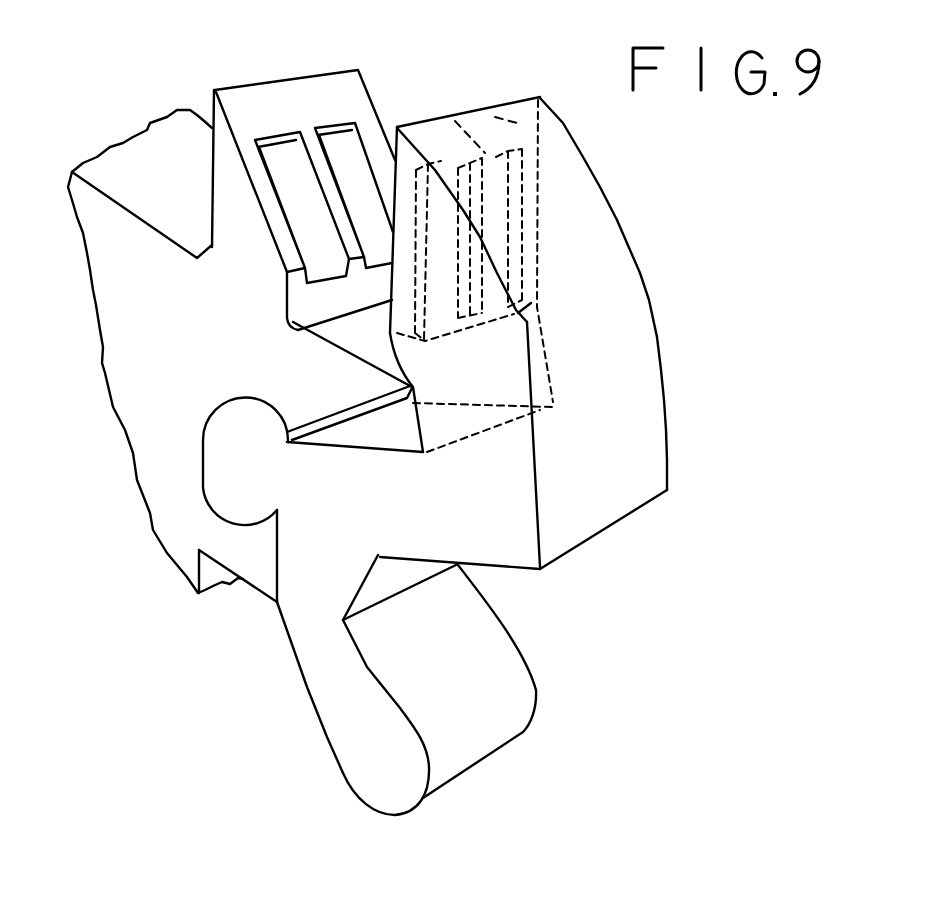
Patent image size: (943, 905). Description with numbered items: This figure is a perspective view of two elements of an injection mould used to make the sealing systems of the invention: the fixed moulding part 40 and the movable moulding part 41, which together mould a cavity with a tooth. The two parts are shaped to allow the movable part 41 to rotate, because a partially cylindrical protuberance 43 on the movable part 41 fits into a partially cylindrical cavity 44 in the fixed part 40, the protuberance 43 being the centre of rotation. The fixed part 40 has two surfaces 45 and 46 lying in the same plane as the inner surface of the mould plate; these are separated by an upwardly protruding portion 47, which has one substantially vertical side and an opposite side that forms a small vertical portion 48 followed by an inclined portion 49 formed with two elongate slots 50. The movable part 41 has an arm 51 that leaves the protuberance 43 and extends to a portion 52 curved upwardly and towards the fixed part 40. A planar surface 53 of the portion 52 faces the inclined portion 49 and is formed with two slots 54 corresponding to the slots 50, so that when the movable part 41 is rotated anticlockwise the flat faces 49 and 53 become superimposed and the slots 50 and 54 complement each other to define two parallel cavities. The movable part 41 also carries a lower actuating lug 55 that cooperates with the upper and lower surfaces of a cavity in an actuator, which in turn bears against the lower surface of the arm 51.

The fixed moulding part 40 is at (92, 372).
The movable moulding part 41 is at (702, 431).
The partially cylindrical protuberance 43 is at (240, 457).
The partially cylindrical cavity 44 is at (220, 410).
The surface 45 is at (132, 165).
The surface 46 is at (355, 352).
The upwardly protruding portion 47 is at (238, 188).
The small vertical portion 48 is at (316, 303).
The inclined portion 49 is at (301, 100).
The elongate slots 50 is at (280, 160).
The arm 51 is at (490, 523).
The curved portion 52 is at (602, 290).
The planar surface 53 is at (507, 118).
The slots 54 is at (457, 123).
The lower actuating lug 55 is at (367, 735).